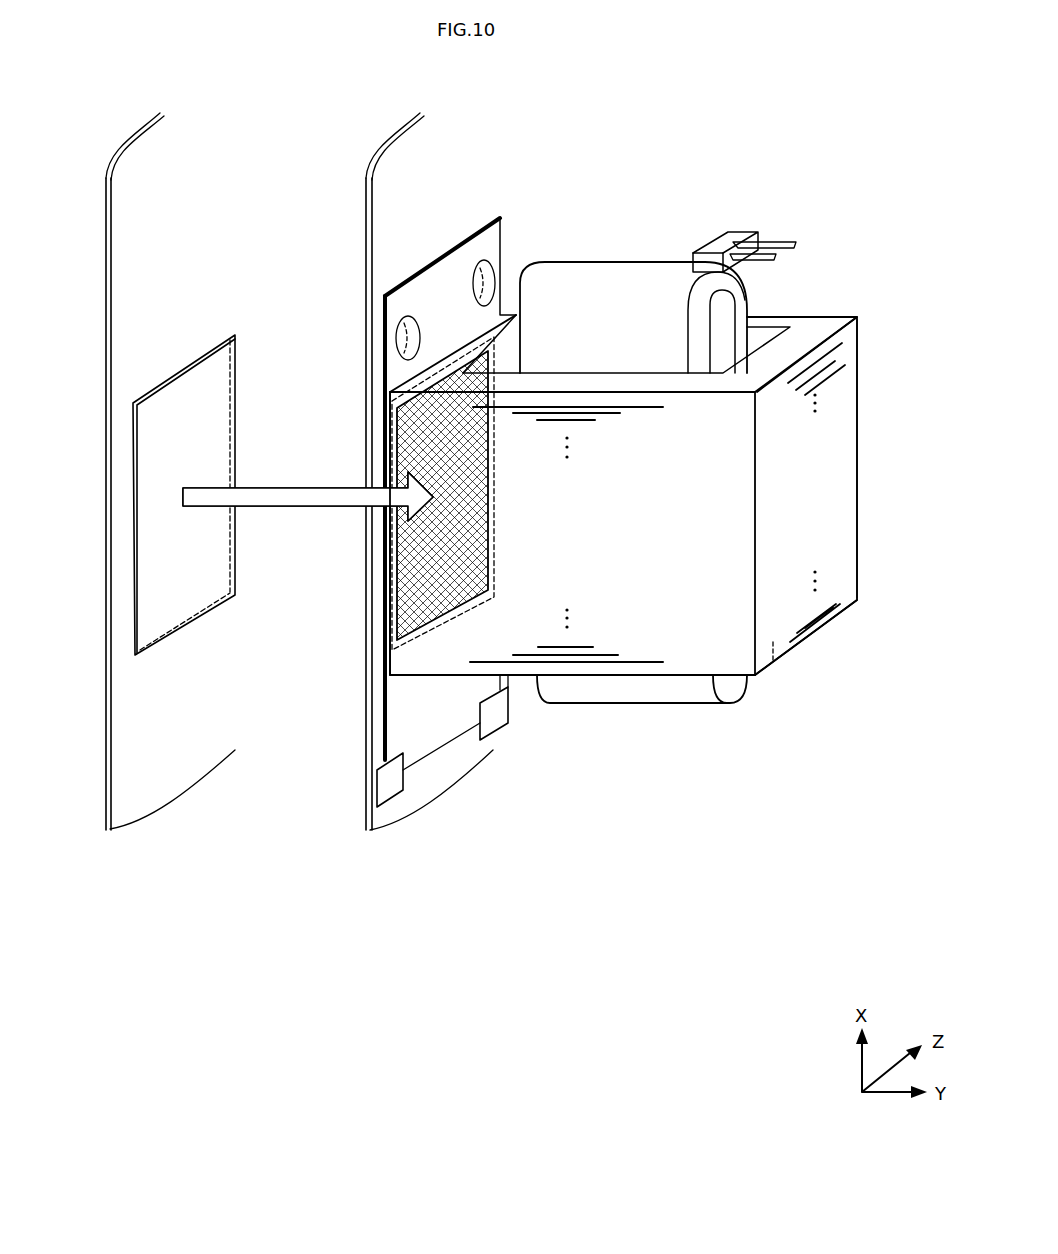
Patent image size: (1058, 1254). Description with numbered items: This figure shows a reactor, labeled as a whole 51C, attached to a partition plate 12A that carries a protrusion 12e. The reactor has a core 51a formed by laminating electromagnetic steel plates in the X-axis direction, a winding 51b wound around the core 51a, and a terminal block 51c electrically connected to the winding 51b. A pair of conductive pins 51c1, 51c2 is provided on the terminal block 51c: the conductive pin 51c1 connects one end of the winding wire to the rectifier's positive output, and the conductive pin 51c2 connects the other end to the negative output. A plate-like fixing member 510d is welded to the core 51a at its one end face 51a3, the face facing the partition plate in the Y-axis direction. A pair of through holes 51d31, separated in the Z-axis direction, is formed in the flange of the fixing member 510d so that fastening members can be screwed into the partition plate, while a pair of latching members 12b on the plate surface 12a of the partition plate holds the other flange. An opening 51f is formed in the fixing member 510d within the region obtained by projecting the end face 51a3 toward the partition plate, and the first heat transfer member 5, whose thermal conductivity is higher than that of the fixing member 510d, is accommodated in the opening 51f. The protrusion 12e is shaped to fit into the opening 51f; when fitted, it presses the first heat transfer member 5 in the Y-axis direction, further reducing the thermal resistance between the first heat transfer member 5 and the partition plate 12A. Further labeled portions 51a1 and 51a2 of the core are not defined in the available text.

The plate surface 12a is at (145, 158).
The partition plate 12A is at (105, 189).
The protrusion 12e is at (155, 560).
The latching members 12b is at (495, 710).
The first heat transfer member 5 is at (405, 610).
The opening 51f is at (392, 425).
The one end face 51a3 is at (406, 385).
The through holes 51d31 is at (400, 330).
The fixing member 510d is at (485, 222).
The winding 51b is at (620, 272).
The terminal block 51c is at (723, 233).
The conductive pin 51c1 is at (782, 243).
The conductive pin 51c2 is at (770, 258).
The top face of housing 51a1 is at (830, 317).
The blower unit 51C is at (857, 543).
The core 51a is at (715, 555).
The bottom face of housing 51a2 is at (777, 663).